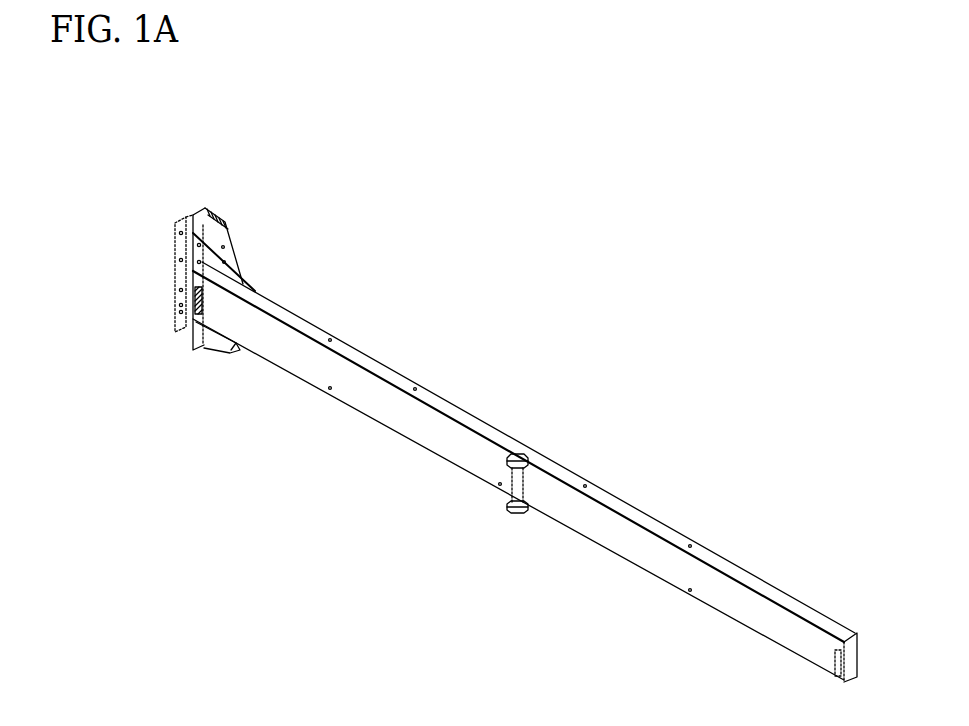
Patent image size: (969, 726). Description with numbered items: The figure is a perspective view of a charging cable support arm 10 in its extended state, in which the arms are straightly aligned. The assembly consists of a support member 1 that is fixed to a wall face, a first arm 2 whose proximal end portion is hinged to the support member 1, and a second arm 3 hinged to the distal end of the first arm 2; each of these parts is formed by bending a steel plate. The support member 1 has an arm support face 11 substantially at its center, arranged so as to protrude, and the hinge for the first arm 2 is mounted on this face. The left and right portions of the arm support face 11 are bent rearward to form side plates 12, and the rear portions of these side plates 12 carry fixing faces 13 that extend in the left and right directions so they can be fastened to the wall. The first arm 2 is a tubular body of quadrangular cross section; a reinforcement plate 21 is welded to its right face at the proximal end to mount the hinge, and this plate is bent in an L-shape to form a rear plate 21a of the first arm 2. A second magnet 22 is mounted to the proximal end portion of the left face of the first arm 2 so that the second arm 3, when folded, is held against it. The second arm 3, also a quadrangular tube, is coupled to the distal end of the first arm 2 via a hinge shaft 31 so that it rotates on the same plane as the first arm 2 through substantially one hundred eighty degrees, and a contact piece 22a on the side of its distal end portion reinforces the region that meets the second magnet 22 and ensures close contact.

The support member 1 is at (194, 208).
The charging cable support arm 10 is at (555, 380).
The arm support face 11 is at (228, 231).
The side plates 12 is at (174, 233).
The fixing faces 13 is at (205, 210).
The first arm 2 is at (418, 385).
The reinforcement plate 21 is at (238, 268).
The rear plate 21a is at (204, 353).
The second magnet 22 is at (190, 318).
The contact piece 22a is at (840, 653).
The second arm 3 is at (722, 557).
The hinge shaft 31 is at (508, 484).